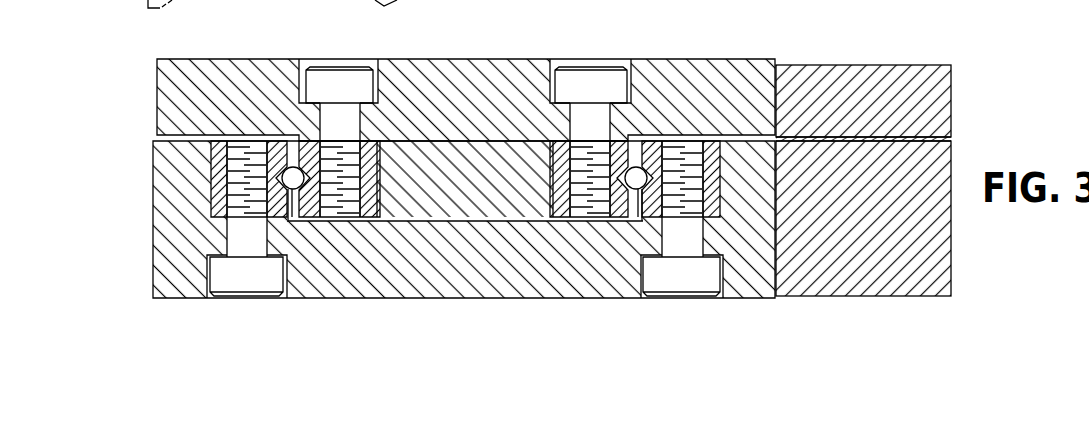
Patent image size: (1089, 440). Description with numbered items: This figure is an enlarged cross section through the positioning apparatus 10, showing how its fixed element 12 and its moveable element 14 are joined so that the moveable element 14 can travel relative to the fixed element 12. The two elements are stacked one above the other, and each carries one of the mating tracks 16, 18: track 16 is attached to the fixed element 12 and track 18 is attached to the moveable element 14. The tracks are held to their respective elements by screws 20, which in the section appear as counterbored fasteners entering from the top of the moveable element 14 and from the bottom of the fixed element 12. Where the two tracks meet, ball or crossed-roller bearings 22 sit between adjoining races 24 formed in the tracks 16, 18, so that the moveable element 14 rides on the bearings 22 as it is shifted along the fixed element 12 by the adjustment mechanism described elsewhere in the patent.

The positioning apparatus 10 is at (965, 88).
The fixed element 12 is at (153, 216).
The moveable element 14 is at (157, 96).
The mating track 16 is at (204, 146).
The mating track 18 is at (378, 180).
The screws 20 is at (340, 67).
The ball or crossed-roller bearings 22 is at (290, 222).
The races 24 is at (276, 160).